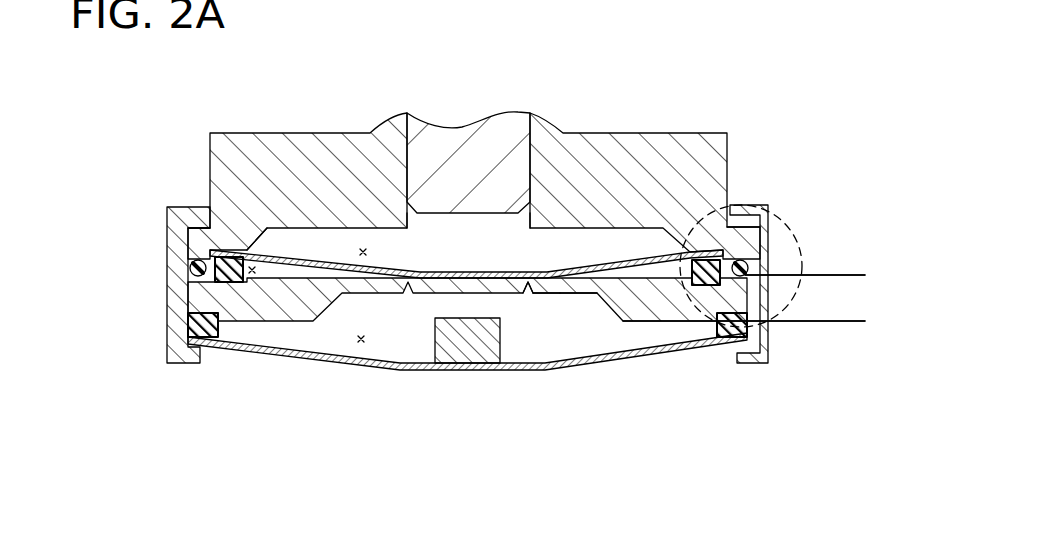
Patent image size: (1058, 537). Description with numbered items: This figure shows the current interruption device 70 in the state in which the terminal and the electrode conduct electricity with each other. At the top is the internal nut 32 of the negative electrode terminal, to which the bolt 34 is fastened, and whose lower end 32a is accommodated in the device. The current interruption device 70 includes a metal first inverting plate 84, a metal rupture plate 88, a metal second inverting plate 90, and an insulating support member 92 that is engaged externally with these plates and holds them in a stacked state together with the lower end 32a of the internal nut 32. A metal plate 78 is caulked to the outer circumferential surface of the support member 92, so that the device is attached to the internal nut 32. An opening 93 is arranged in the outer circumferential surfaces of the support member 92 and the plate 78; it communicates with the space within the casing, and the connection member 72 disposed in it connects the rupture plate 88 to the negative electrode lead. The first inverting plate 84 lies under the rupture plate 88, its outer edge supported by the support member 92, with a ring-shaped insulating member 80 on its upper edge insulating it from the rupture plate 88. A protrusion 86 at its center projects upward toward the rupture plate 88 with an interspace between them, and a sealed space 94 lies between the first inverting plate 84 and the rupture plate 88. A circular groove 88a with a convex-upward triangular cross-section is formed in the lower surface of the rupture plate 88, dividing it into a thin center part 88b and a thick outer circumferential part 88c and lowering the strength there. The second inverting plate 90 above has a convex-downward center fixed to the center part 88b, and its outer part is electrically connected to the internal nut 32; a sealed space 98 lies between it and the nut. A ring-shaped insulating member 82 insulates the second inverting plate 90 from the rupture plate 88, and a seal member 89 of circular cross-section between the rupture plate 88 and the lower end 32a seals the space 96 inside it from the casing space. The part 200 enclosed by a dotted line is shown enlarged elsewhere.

The internal nut 32 is at (228, 185).
The lower end of the internal nut 32a is at (202, 240).
The bolt 34 is at (495, 177).
The current interruption device 70 is at (794, 188).
The connection member 72 is at (833, 323).
The plate 78 is at (173, 364).
The insulating member 80 is at (190, 317).
The insulating member 82 is at (190, 282).
The first inverting plate 84 is at (387, 372).
The protrusion 86 is at (455, 350).
The rupture plate 88 is at (560, 280).
The groove 88a is at (548, 284).
The center part 88b is at (528, 291).
The outer circumferential part 88c is at (675, 312).
The seal member 89 is at (750, 262).
The second inverting plate 90 is at (238, 245).
The support member 92 is at (188, 266).
The opening 93 is at (750, 271).
The space 94 is at (361, 344).
The space 96 is at (237, 253).
The space 98 is at (363, 250).
The part enclosed by a dotted line 200 is at (745, 192).